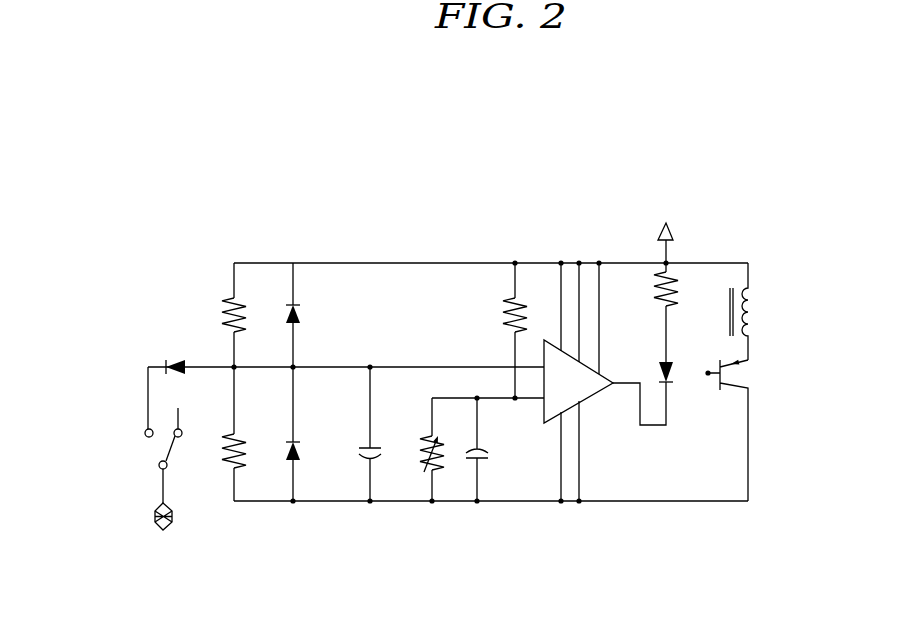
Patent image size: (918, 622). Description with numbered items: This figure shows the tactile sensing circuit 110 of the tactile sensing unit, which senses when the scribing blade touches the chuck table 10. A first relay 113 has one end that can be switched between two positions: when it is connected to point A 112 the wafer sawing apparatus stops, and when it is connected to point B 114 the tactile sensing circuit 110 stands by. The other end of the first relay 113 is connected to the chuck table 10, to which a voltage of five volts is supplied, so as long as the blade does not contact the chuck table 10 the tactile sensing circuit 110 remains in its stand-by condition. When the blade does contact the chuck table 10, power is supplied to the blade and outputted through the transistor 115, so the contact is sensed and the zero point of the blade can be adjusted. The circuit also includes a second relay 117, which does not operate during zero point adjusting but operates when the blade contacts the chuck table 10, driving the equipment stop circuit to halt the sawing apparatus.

The tactile sensing circuit 110 is at (186, 231).
The relay 1-1 113 is at (92, 437).
The point B 114 is at (130, 412).
The point A 112 is at (193, 428).
The chuck table 10 is at (112, 530).
The relay 2 117 is at (795, 292).
The Q3 115 is at (785, 372).